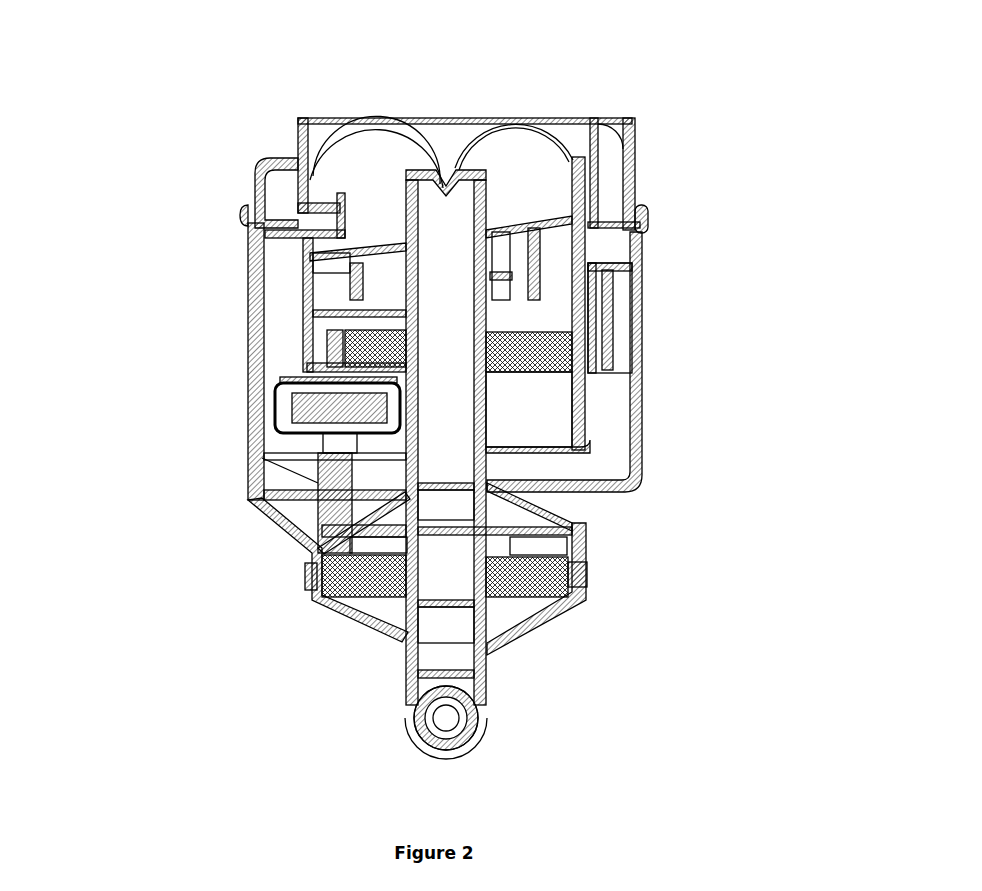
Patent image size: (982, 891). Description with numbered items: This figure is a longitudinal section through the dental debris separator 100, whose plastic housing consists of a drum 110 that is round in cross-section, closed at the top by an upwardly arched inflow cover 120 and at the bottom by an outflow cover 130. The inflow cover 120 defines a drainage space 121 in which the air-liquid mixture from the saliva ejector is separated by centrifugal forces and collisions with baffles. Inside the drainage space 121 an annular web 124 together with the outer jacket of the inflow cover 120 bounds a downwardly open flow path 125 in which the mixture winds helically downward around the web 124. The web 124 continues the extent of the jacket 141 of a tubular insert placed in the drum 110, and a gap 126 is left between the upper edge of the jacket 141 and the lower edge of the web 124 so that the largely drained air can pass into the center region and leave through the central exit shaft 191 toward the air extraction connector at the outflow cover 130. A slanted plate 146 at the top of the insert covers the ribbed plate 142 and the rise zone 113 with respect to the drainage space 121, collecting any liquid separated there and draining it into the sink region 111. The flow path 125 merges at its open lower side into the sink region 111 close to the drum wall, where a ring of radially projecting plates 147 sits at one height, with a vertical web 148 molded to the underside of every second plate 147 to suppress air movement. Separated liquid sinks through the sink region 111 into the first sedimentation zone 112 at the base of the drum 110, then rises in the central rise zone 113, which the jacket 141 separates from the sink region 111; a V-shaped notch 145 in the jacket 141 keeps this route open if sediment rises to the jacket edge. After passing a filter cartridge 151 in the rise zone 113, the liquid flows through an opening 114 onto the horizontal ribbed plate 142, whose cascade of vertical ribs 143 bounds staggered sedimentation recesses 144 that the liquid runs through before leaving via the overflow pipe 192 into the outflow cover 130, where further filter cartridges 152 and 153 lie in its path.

The separator 100 is at (520, 90).
The drum 110 is at (248, 410).
The sink region 111 is at (275, 300).
The first sedimentation zone 112 is at (297, 518).
The rise zone 113 is at (529, 409).
The opening 114 is at (550, 312).
The inflow cover 120 is at (268, 160).
The drainage space 121 is at (377, 156).
The annular web 124 is at (585, 177).
The flow path 125 is at (600, 197).
The gap 126 is at (310, 212).
The outflow cover 130 is at (350, 612).
The jacket surface 141 is at (470, 380).
The ribbed plate 142 is at (548, 338).
The vertical ribs 143 is at (517, 288).
The sedimentation recesses 144 is at (388, 292).
The V-shaped notch 145 is at (305, 352).
The slanted plate 146 is at (548, 217).
The plates 147 is at (332, 302).
The vertical web 148 is at (617, 298).
The filter cartridge 151 is at (556, 372).
The filter cartridge 152 is at (275, 390).
The filter cartridge 153 is at (318, 583).
The exit shaft 191 is at (617, 497).
The overflow pipe 192 is at (247, 243).